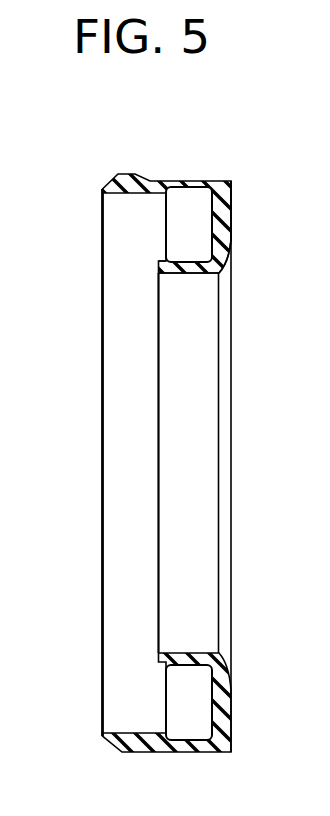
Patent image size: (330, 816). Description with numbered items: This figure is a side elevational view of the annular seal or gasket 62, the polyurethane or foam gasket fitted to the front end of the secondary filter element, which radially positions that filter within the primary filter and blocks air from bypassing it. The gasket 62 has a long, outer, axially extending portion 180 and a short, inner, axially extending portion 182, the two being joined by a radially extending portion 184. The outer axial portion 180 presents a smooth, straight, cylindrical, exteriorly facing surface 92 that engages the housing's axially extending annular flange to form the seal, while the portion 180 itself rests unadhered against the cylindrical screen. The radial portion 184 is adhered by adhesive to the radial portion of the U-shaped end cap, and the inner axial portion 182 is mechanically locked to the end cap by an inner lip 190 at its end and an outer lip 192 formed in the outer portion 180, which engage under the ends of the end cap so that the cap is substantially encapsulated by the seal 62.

The annular seal or gasket 62 is at (252, 352).
The exteriorly facing surface 92 is at (188, 181).
The outer axially extending portion 180 is at (130, 174).
The inner axially extending portion 182 is at (181, 268).
The radially extending portion 184 is at (223, 197).
The inner lip 190 is at (168, 666).
The outer lip 192 is at (160, 718).